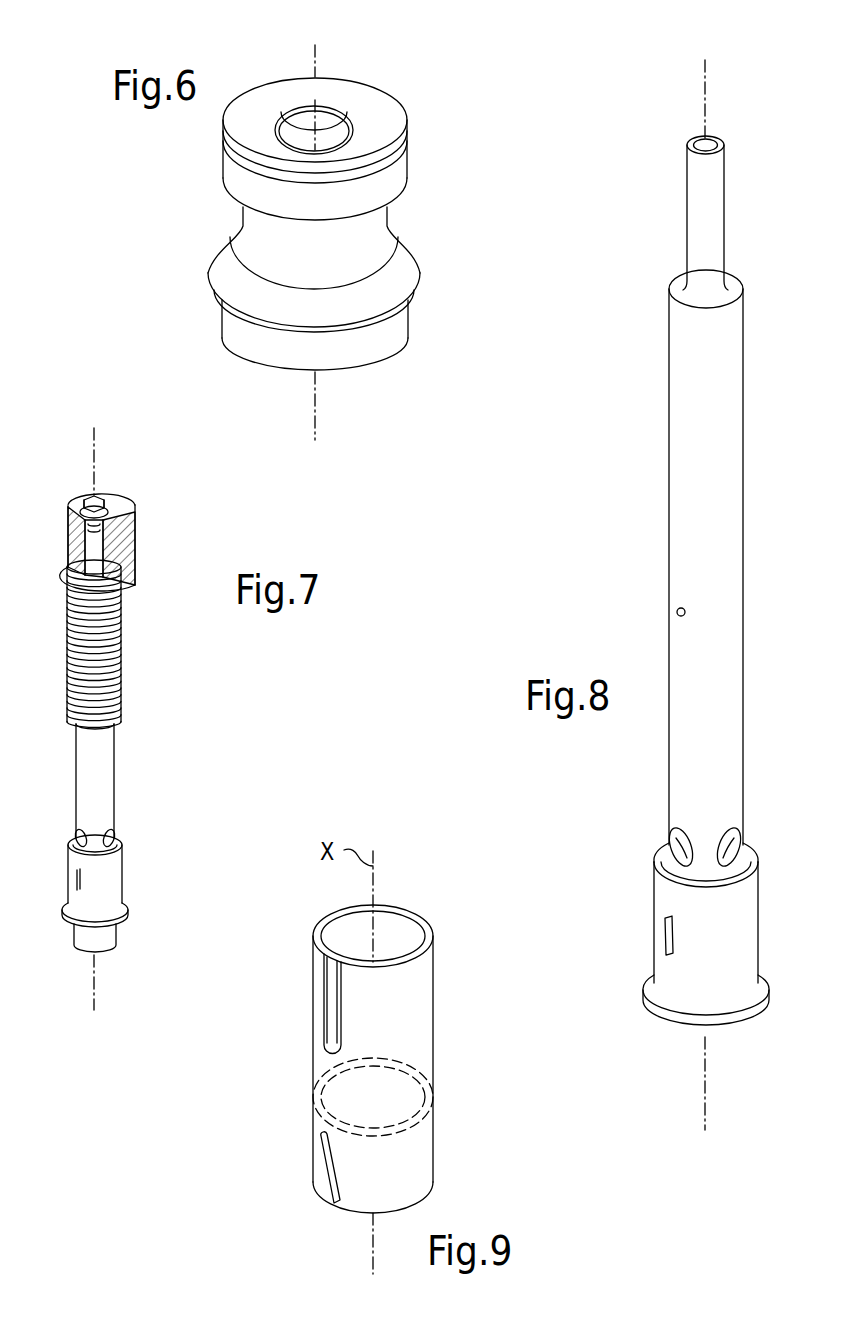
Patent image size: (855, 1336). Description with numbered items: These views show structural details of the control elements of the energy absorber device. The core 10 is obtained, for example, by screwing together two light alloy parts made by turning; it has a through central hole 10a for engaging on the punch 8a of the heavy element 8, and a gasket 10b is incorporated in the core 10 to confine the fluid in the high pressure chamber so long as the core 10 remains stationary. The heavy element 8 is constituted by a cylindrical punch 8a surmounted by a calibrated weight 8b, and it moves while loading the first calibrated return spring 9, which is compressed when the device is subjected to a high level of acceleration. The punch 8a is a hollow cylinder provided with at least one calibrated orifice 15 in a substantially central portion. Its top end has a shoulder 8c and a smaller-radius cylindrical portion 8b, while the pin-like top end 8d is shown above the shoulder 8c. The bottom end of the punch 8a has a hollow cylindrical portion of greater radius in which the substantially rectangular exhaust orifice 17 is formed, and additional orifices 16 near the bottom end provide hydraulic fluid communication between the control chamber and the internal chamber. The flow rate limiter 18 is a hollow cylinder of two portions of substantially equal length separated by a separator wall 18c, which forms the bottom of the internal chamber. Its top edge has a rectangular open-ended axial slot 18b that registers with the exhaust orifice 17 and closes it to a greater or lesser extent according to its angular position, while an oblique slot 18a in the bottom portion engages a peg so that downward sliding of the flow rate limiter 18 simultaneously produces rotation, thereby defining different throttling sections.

In FIG. 6, the core 10 is at (268, 224).
In FIG. 6, the through central hole 10a is at (352, 104).
In FIG. 6, the gasket 10b is at (164, 202).
In FIG. 7, the heavy element 8 is at (154, 723).
In FIG. 7, the cylindrical punch 8a is at (105, 772).
In FIG. 8, the cylindrical punch 8a is at (678, 478).
In FIG. 7, the calibrated weight 8b is at (130, 548).
In FIG. 8, the shoulder 8c is at (686, 304).
In FIG. 8, the pin end 8d is at (698, 178).
In FIG. 7, the first calibrated return spring 9 is at (115, 630).
In FIG. 8, the calibrated orifice 15 is at (676, 612).
In FIG. 8, the additional orifices 16 is at (672, 856).
In FIG. 8, the exhaust orifice 17 is at (667, 938).
In FIG. 9, the flow rate limiter 18 is at (394, 1059).
In FIG. 9, the oblique slot 18a is at (321, 1178).
In FIG. 9, the axial slot 18b is at (331, 983).
In FIG. 9, the separator wall 18c is at (418, 1070).